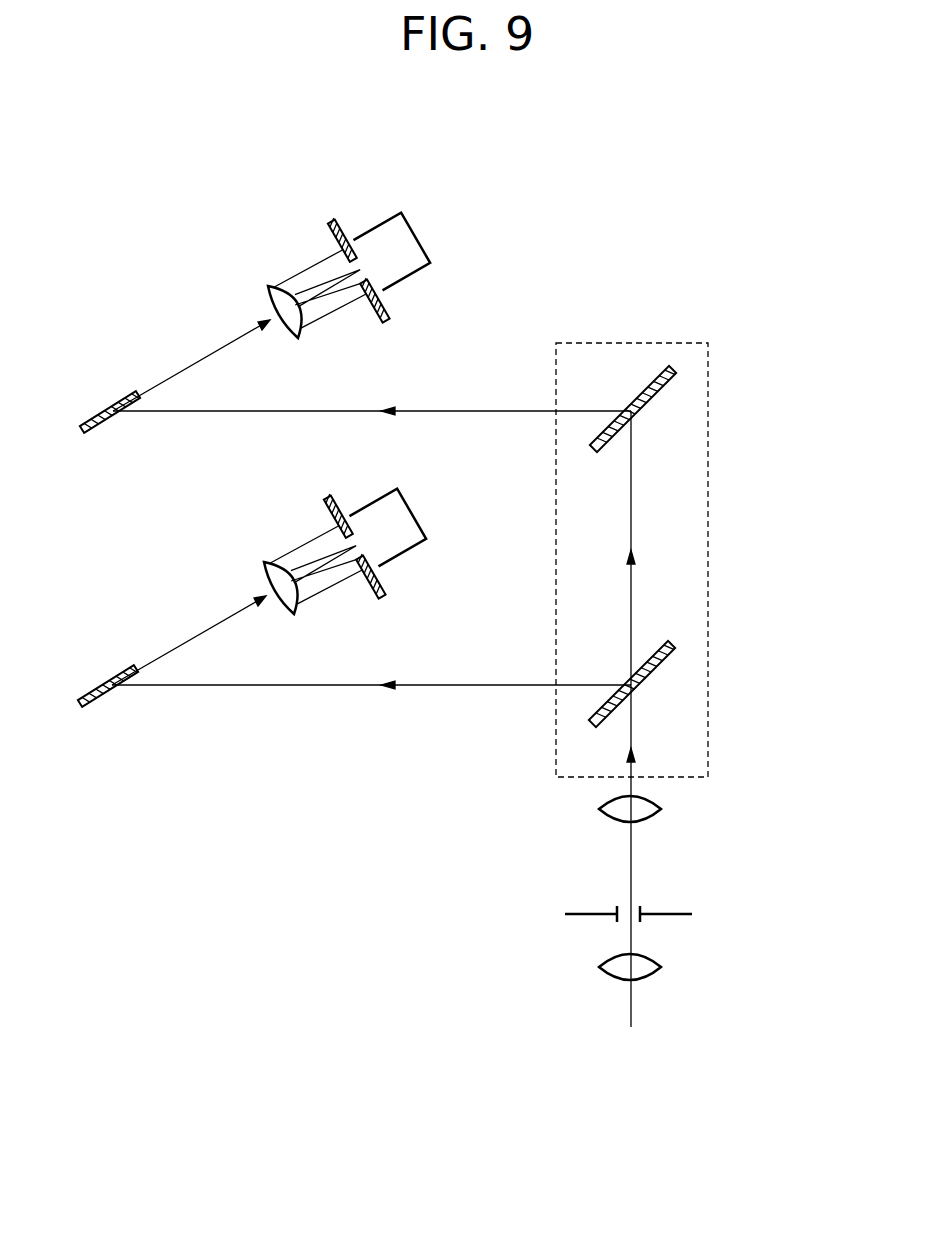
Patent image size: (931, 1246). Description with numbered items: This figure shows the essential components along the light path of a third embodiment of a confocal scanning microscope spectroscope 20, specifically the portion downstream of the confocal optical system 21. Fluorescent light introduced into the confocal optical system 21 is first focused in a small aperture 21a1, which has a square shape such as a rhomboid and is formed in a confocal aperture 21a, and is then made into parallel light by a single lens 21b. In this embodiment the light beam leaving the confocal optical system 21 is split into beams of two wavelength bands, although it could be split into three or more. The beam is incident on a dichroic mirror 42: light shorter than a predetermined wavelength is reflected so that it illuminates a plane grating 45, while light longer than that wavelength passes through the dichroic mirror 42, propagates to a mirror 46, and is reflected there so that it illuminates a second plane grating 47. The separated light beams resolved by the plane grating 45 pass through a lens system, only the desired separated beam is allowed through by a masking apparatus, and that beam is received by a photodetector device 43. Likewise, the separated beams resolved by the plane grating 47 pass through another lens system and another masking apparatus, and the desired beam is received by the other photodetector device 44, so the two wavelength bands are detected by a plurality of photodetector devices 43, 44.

The spectroscope 20 is at (753, 348).
The confocal optical system 21 is at (665, 893).
The confocal aperture 21a is at (582, 918).
The small aperture 21a1 is at (623, 905).
The single lens 21b is at (652, 817).
The dichroic mirror 42 is at (663, 702).
The photodetector device 43 is at (420, 520).
The photodetector device 44 is at (423, 243).
The plane grating 45 is at (110, 705).
The mirror 46 is at (672, 433).
The plane grating 47 is at (112, 432).